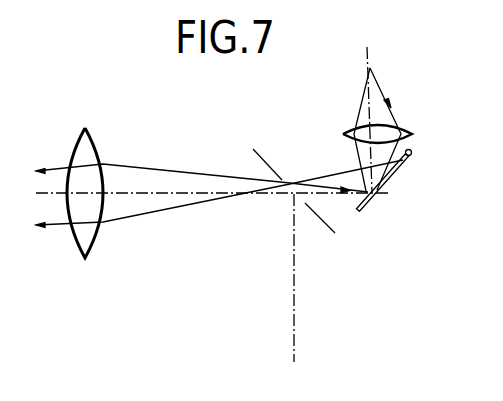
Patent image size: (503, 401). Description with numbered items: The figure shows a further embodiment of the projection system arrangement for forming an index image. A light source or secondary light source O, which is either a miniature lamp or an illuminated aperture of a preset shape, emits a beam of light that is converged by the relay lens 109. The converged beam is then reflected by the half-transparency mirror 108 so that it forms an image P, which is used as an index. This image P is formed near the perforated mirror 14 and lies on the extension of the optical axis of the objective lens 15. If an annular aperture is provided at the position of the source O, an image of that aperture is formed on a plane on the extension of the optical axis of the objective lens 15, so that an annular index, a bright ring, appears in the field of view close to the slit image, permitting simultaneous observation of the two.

The objective lens 15 is at (92, 143).
The perforated mirror 14 is at (261, 155).
The image P is at (290, 182).
The light source or aperture O is at (372, 67).
The relay lens 109 is at (412, 129).
The half-transparency mirror 108 is at (368, 208).